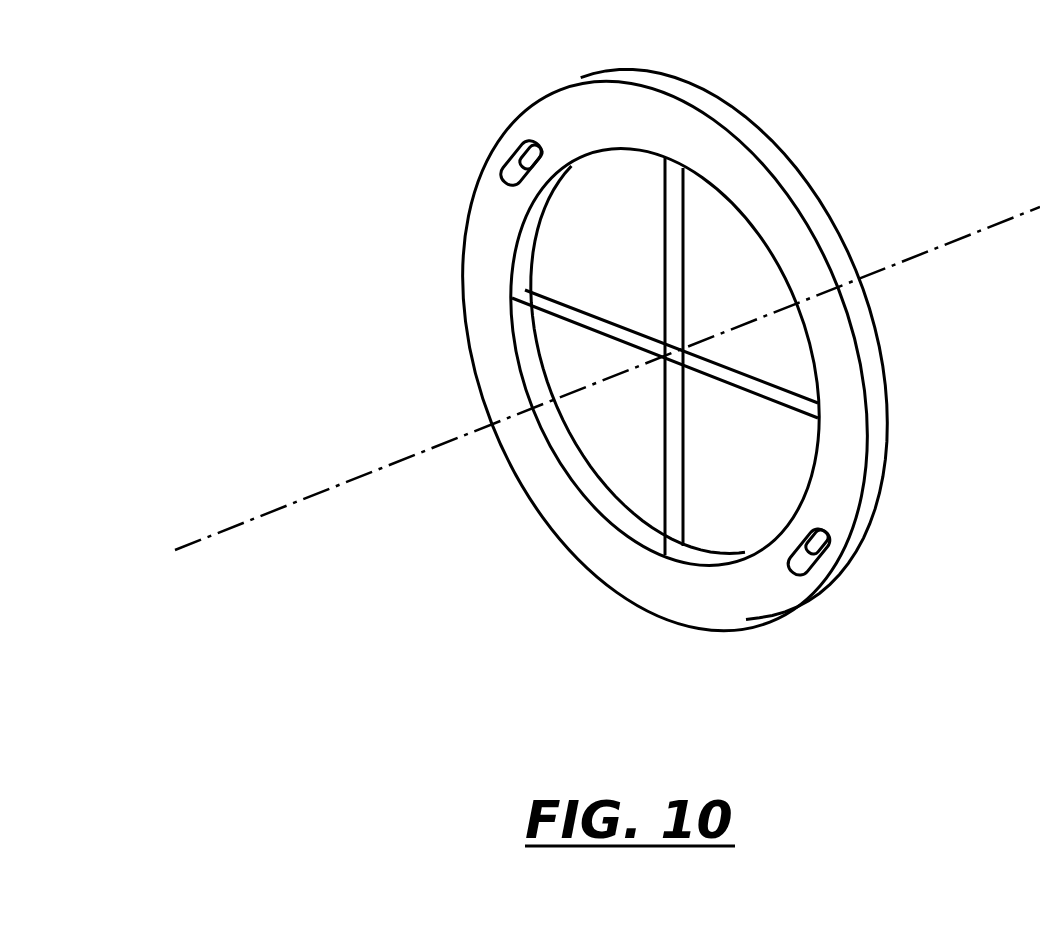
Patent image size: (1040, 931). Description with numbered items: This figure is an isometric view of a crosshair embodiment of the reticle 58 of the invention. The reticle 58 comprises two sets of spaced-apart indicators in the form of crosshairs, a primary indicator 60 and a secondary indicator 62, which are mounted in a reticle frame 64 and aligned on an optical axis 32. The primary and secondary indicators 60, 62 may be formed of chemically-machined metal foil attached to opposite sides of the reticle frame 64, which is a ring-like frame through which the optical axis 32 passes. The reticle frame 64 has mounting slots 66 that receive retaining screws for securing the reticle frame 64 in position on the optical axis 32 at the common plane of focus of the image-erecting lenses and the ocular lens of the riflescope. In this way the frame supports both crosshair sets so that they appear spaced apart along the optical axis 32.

The reticle 58 is at (407, 141).
The reticle frame 64 is at (740, 130).
The primary indicator 60 is at (663, 447).
The secondary indicator 62 is at (757, 375).
The mounting slots 66 is at (538, 147).
The optical axis 32 is at (352, 482).